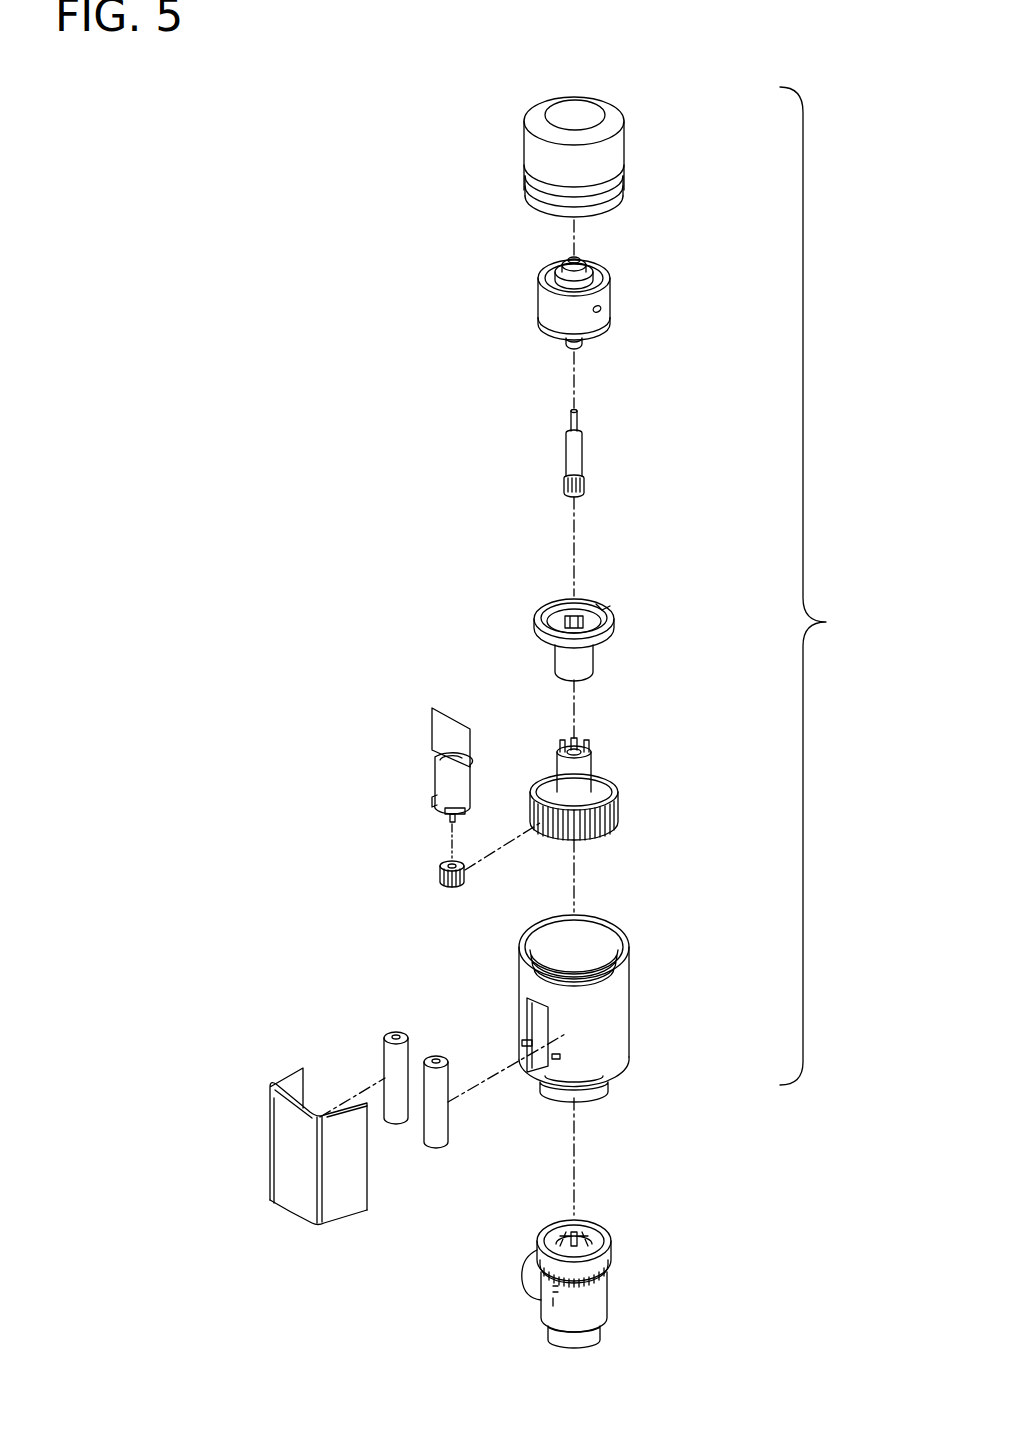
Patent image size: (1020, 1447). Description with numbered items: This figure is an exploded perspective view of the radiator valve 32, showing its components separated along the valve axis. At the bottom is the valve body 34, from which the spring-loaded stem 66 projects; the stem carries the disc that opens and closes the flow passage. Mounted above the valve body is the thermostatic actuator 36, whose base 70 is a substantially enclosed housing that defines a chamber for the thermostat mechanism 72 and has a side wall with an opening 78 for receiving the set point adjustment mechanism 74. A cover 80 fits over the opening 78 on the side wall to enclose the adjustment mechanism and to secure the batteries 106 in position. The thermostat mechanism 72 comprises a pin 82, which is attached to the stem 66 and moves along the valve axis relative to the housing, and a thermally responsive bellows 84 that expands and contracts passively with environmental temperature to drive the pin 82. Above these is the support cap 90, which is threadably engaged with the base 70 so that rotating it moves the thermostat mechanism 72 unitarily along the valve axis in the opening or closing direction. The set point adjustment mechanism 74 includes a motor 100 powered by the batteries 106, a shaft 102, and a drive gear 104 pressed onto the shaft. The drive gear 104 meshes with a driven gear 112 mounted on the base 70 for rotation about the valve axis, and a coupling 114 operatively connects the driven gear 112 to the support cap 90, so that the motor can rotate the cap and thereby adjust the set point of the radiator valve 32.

The radiator valve 32 is at (113, 1277).
The valve body 34 is at (598, 1297).
The thermostatic actuator 36 is at (827, 586).
The stem 66 is at (580, 1241).
The base 70 is at (622, 1004).
The thermostat mechanism 72 is at (682, 332).
The set point adjustment mechanism 74 is at (325, 808).
The opening 78 is at (522, 1038).
The cover 80 is at (285, 1137).
The pin 82 is at (578, 450).
The bellows 84 is at (607, 303).
The support cap 90 is at (615, 163).
The motor 100 is at (432, 775).
The shaft 102 is at (450, 820).
The drive gear 104 is at (440, 878).
The batteries 106 is at (392, 1032).
The driven gear 112 is at (612, 803).
The coupling 114 is at (585, 660).